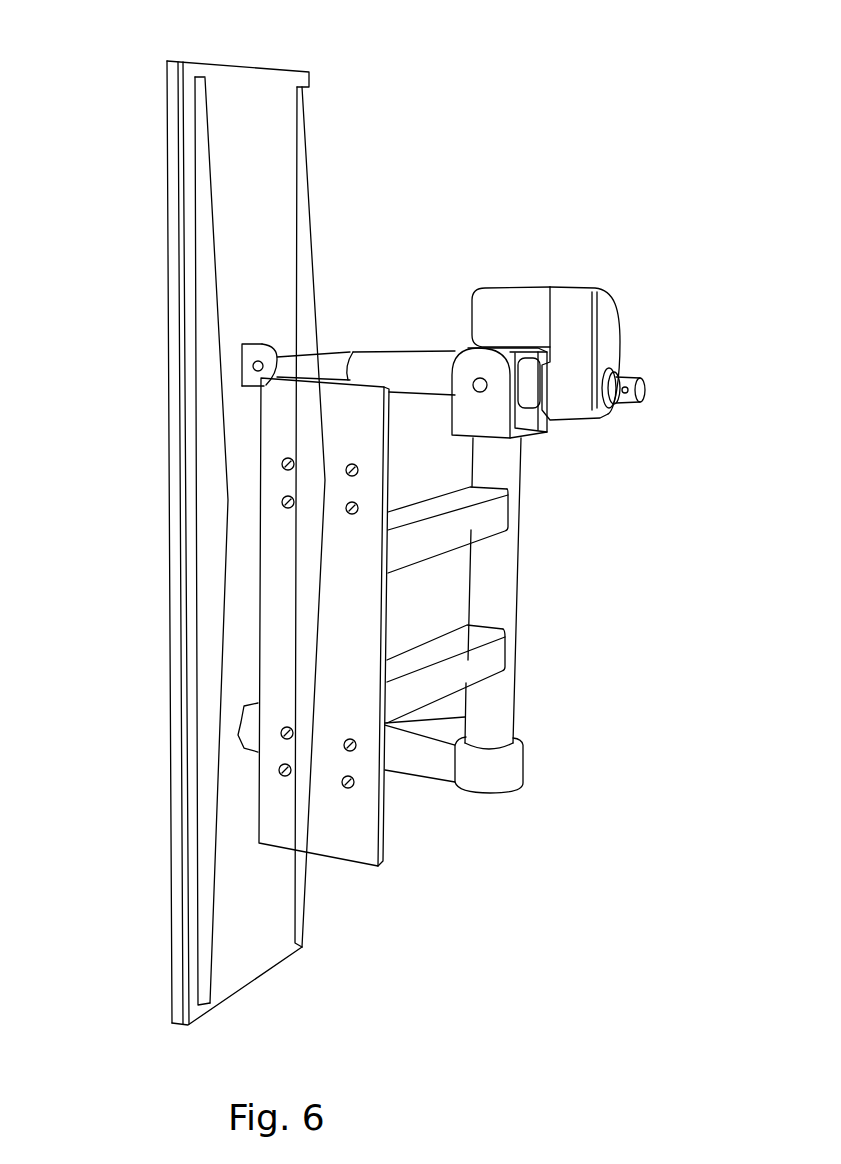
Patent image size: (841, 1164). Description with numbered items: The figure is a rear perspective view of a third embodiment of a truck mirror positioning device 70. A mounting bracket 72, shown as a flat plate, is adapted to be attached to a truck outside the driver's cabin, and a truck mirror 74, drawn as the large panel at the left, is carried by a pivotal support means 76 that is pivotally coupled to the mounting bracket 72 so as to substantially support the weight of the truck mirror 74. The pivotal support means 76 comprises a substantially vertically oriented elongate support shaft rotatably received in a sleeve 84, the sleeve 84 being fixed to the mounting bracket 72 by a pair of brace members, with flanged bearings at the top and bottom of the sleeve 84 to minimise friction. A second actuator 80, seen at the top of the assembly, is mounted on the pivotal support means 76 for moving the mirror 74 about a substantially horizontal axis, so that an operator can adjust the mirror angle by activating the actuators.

The truck mirror positioning device 70 is at (422, 172).
The mounting bracket 72 is at (382, 852).
The truck mirror 74 is at (165, 170).
The pivotal support means 76 is at (548, 450).
The second actuator 80 is at (632, 342).
The sleeve 84 is at (497, 582).